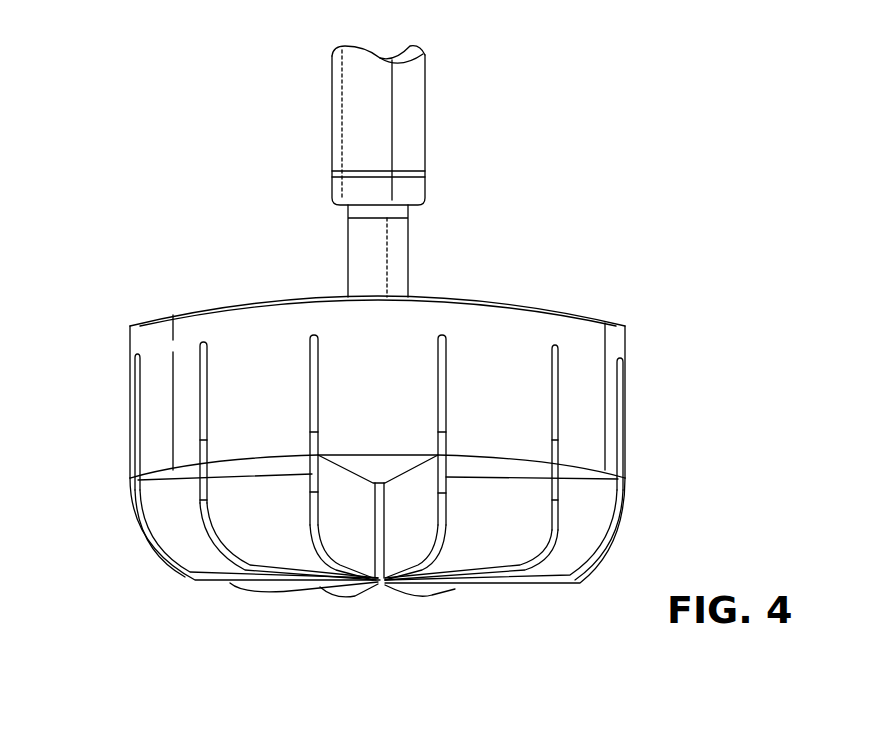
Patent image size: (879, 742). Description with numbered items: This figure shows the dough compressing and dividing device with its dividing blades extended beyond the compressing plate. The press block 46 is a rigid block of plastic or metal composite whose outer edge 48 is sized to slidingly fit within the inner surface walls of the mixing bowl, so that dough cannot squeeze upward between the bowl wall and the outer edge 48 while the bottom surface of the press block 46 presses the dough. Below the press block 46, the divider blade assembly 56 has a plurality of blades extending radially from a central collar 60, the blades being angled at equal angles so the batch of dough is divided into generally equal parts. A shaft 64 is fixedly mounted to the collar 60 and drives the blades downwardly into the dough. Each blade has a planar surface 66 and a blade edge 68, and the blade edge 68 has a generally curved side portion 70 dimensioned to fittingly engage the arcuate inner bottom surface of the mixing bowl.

The press block 46 is at (583, 292).
The outer edge 48 is at (504, 389).
The divider blade assembly 56 is at (135, 555).
The collar 60 is at (378, 588).
The shaft 64 is at (425, 123).
The planar surface 66 is at (603, 517).
The blade edge 68 is at (137, 488).
The side portion 70 is at (158, 573).